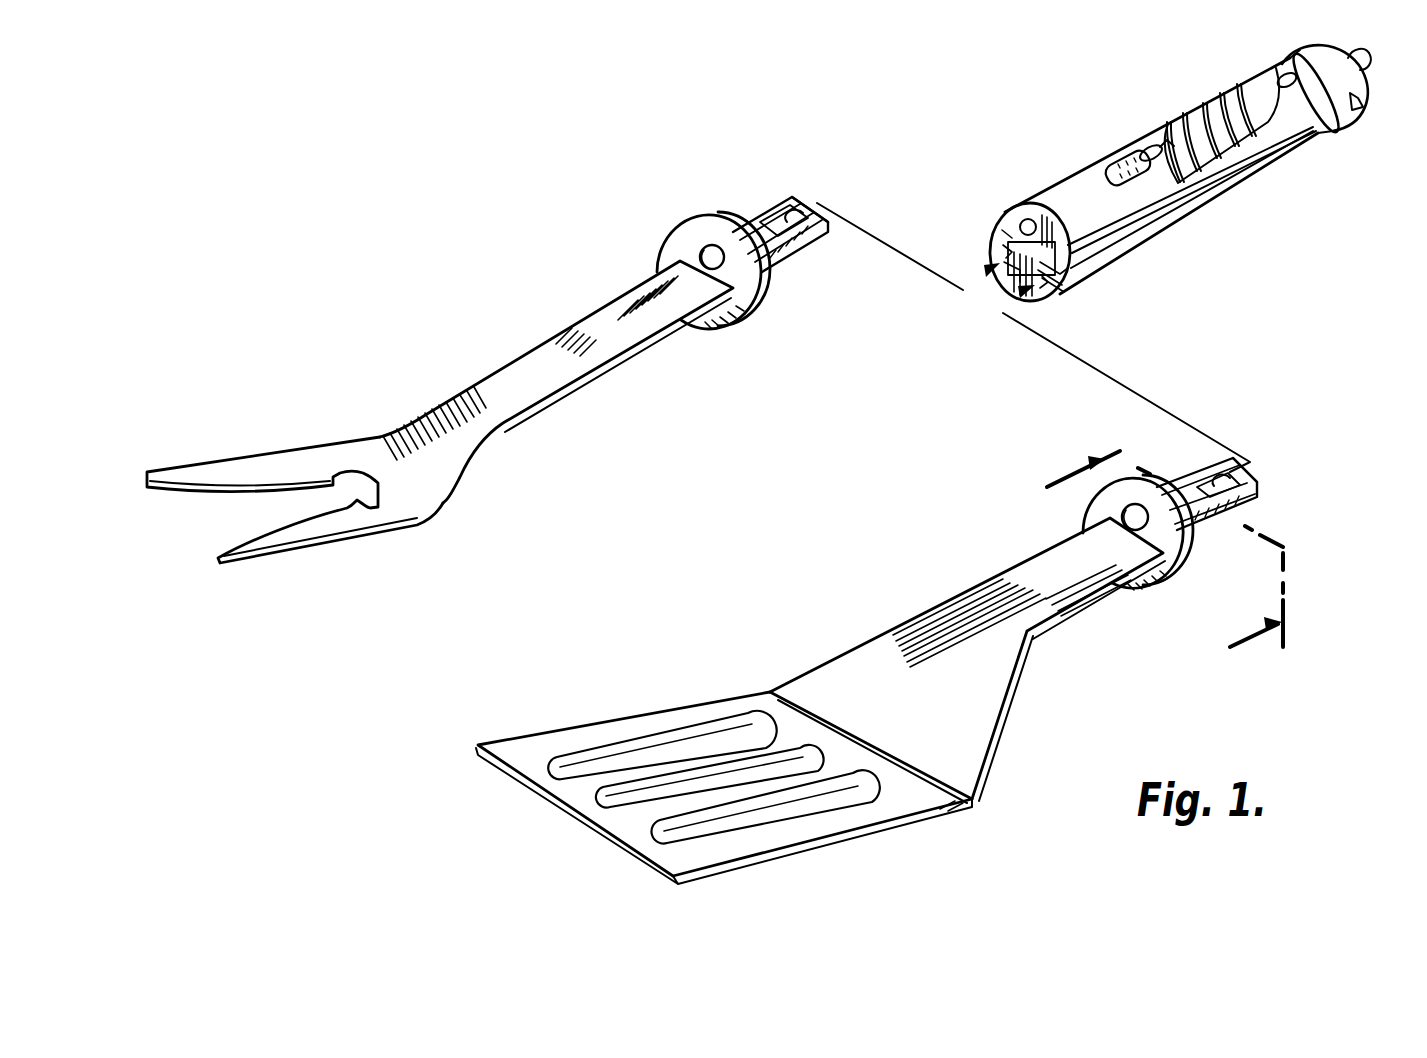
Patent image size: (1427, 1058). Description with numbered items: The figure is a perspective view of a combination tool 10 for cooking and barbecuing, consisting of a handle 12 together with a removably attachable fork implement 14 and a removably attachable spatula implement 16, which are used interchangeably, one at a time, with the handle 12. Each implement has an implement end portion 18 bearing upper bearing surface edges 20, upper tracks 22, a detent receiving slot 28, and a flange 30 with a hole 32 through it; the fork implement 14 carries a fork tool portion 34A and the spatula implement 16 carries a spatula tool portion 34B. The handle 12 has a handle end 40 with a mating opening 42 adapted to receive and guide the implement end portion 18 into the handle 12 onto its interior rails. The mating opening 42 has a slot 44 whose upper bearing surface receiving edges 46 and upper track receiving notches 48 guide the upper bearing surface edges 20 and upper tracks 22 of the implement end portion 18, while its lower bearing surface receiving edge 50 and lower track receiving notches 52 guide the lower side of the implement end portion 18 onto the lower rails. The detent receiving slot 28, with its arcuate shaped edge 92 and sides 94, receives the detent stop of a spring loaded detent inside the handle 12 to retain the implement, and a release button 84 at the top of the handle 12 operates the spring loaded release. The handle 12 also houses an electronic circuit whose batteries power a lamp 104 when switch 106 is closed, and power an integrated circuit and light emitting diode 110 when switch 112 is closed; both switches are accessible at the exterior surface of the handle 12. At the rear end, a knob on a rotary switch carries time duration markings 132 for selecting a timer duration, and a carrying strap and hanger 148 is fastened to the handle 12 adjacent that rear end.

The combination tool 10 is at (430, 228).
The handle 12 is at (1170, 112).
The removably attachable fork implement 14 is at (538, 342).
The removably attachable spatula implement 16 is at (868, 637).
The implement end portion 18 is at (742, 222).
The upper bearing surface edges 20 is at (832, 228).
The upper tracks 22 is at (798, 212).
The detent receiving slot 28 is at (778, 215).
The flange 30 is at (760, 305).
The hole 32 is at (695, 252).
The fork tool portion 34A is at (318, 465).
The spatula tool portion 34B is at (637, 720).
The handle end 40 is at (1015, 294).
The mating opening 42 is at (1110, 258).
The slot 44 is at (1070, 295).
The upper bearing surface receiving edges 46 is at (1002, 228).
The upper track receiving notches 48 is at (1010, 215).
The lower bearing surface receiving edge 50 is at (997, 264).
The lower track receiving notches 52 is at (1000, 245).
The release button 84 is at (1112, 160).
The arcuate shaped edge 92 is at (806, 210).
The sides 94 is at (762, 210).
The lamp L1 104 is at (1030, 220).
The switch S1 106 is at (1158, 160).
The light emitting diode LED1 110 is at (1277, 80).
The switch S2 112 is at (1330, 55).
The time duration markings 132 is at (1358, 112).
The carrying strap and hanger 148 is at (1372, 75).